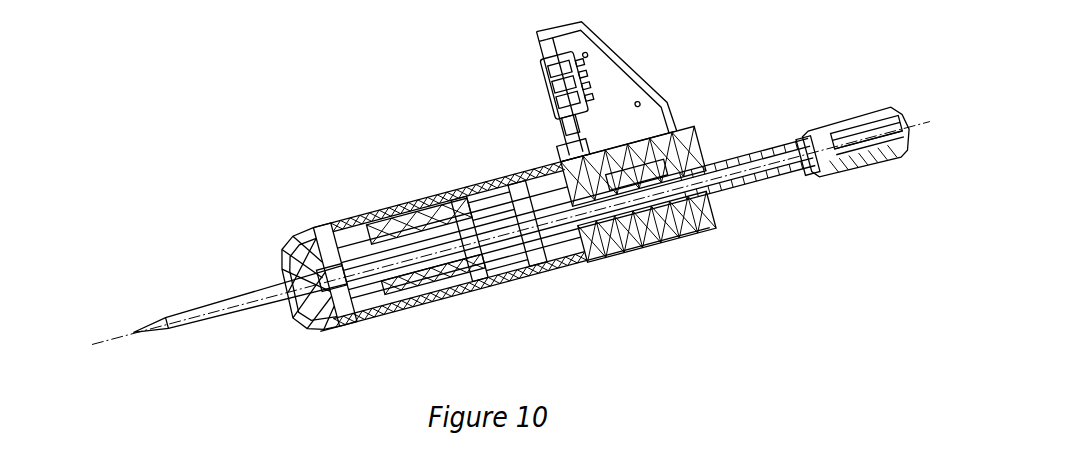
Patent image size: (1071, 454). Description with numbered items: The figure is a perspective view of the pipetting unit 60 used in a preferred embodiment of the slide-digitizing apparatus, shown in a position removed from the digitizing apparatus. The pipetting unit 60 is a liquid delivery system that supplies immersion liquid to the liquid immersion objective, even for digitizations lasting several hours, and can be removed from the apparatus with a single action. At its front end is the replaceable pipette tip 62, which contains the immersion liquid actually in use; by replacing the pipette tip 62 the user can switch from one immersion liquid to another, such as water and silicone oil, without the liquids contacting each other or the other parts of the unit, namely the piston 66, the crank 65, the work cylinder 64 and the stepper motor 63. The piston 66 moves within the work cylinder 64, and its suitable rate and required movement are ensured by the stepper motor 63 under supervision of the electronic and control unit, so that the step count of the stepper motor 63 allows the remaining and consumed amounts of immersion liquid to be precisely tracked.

The pipetting unit 60 is at (104, 131).
The pipette tip 62 is at (248, 290).
The stepper motor 63 is at (575, 155).
The work cylinder 64 is at (382, 230).
The crank 65 is at (828, 123).
The piston 66 is at (433, 210).